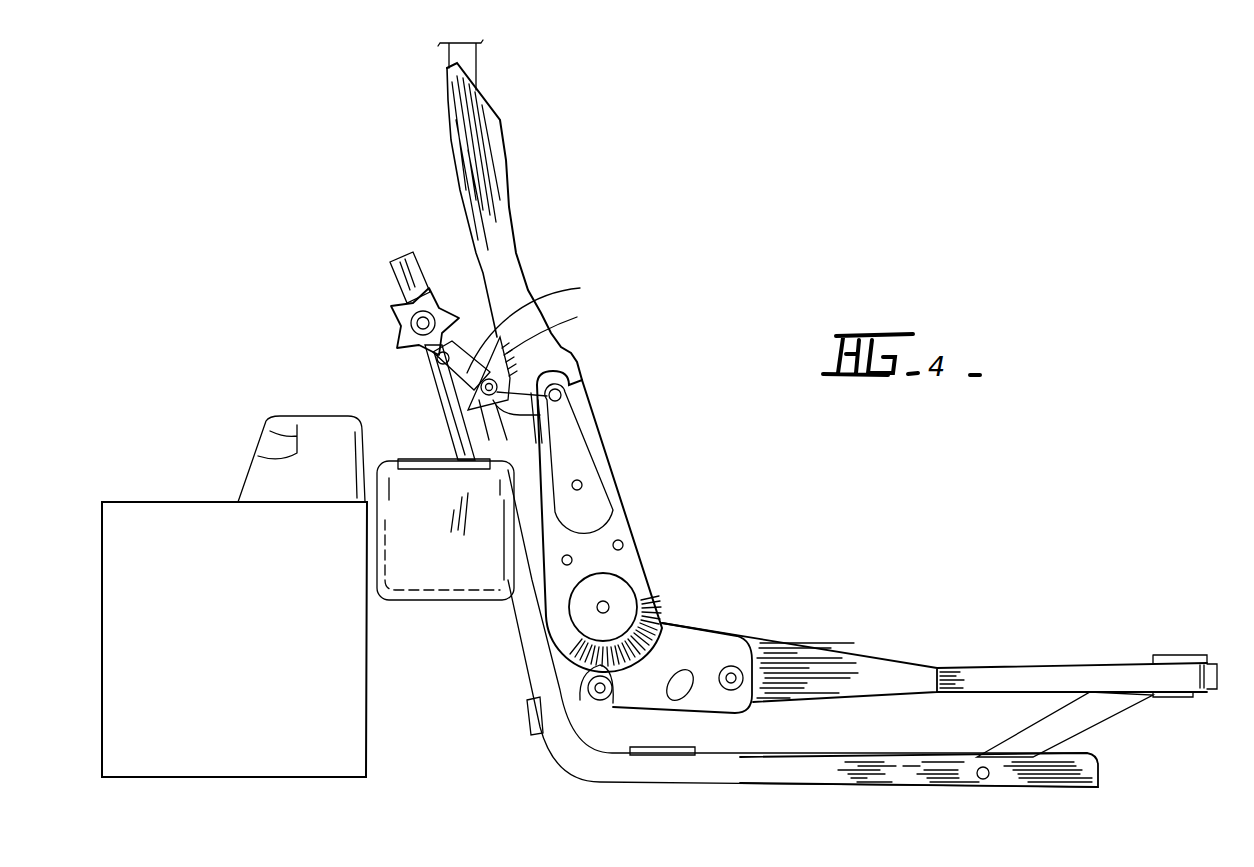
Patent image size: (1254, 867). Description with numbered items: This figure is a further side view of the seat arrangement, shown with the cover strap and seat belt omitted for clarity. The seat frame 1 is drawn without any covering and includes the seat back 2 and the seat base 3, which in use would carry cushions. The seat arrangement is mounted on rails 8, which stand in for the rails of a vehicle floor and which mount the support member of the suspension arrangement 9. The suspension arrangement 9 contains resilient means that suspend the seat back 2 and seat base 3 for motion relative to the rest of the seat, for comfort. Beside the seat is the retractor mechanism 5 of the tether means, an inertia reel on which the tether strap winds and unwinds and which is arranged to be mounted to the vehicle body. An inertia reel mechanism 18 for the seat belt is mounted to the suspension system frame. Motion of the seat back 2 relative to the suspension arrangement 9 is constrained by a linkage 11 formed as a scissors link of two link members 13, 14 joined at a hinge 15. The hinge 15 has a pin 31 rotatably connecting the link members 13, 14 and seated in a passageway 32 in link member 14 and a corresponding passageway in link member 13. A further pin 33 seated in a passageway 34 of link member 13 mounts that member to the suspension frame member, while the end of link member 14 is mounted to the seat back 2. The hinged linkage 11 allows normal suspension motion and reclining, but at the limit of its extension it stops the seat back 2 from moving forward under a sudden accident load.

The seat frame 1 is at (518, 213).
The seat back 2 is at (474, 62).
The seat base 3 is at (993, 683).
The retractor mechanism 5 is at (285, 430).
The rails 8 is at (897, 772).
The suspension arrangement 9 is at (540, 622).
The linkage 11 is at (457, 393).
The link member 13 is at (586, 288).
The link member 14 is at (577, 317).
The hinge 15 is at (498, 387).
The inertia reel mechanism 18 is at (441, 550).
The pin 31 is at (561, 393).
The passageway 32 is at (540, 415).
The pin 33 is at (435, 358).
The passageway 34 is at (433, 373).